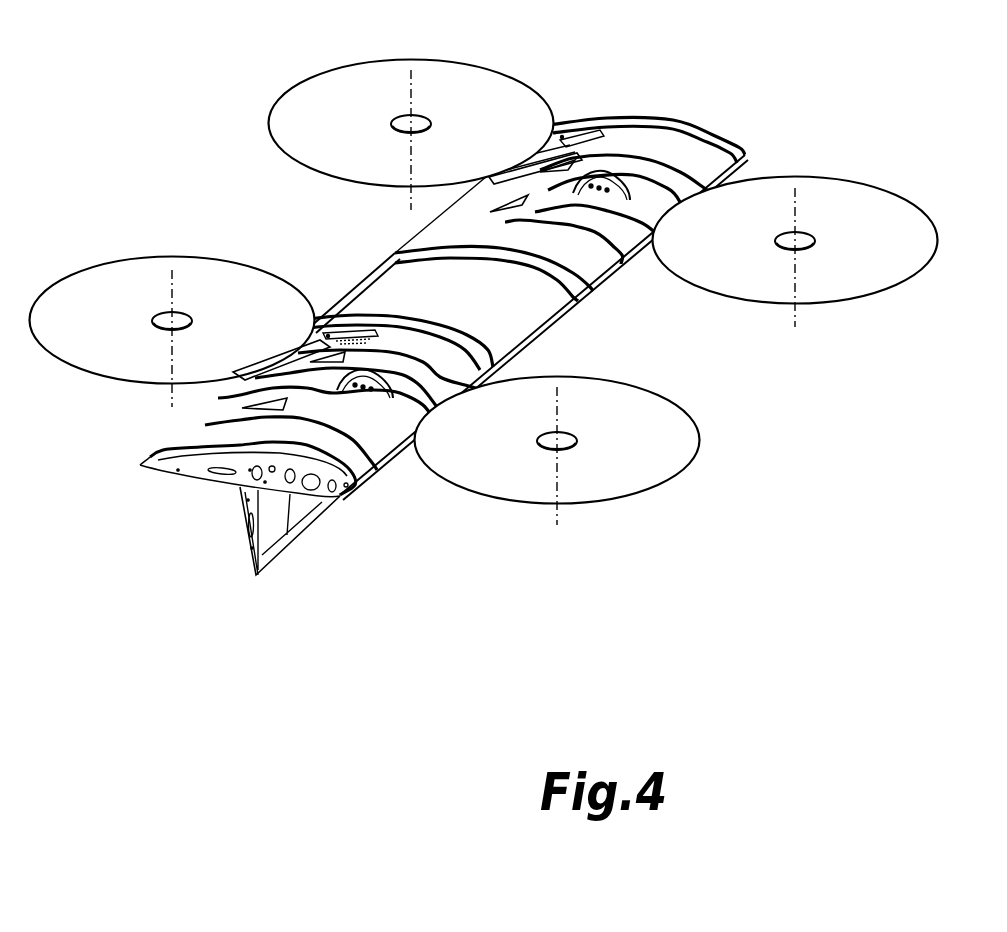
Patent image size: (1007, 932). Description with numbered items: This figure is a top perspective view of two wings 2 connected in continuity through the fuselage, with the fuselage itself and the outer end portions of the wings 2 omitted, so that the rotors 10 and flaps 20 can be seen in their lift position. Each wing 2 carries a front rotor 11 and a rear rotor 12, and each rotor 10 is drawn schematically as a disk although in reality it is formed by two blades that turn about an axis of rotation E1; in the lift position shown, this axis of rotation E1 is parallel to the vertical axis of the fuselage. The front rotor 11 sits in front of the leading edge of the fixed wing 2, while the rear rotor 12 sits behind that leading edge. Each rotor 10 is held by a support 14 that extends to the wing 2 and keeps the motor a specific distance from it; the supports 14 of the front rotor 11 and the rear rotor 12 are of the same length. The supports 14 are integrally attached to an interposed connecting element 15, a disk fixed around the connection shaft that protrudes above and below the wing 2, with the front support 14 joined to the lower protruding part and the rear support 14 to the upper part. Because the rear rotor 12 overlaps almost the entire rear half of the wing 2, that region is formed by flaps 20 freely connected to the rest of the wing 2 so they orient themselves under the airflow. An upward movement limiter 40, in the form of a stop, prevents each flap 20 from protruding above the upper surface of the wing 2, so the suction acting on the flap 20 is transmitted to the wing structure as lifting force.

The wing 2 is at (444, 346).
The rotor 10 is at (494, 265).
The front rotor 11 is at (873, 218).
The rear rotor 12 is at (500, 100).
The support 14 is at (527, 170).
The interposed connecting element 15 is at (374, 348).
The flap 20 is at (243, 553).
The upward movement limiter 40 is at (557, 143).
The axis of rotation E1 is at (411, 90).